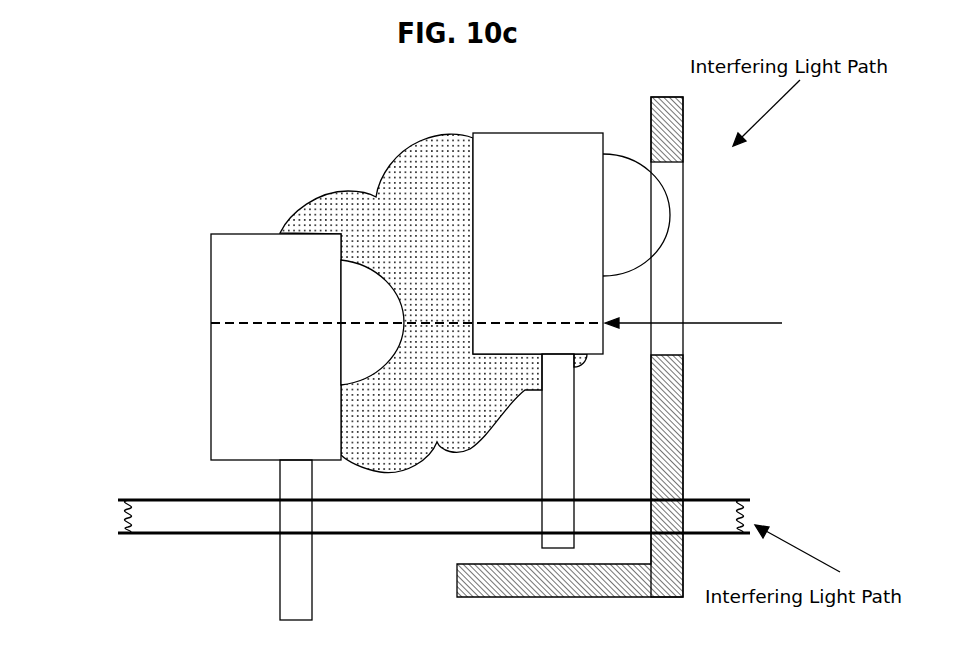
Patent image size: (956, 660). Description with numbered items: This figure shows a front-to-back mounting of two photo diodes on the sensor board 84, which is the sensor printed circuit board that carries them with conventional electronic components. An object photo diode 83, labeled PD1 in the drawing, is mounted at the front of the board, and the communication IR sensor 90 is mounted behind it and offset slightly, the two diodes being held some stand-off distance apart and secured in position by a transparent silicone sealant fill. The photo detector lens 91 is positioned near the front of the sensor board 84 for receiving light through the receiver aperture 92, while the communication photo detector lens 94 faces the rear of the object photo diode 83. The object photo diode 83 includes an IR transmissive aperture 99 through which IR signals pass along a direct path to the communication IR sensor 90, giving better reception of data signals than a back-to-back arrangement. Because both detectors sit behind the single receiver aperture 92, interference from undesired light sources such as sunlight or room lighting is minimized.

The first photodiode PD1 83 is at (553, 133).
The sensor board 84 is at (175, 533).
The communication IR sensor 90 is at (211, 291).
The photo detector lens 91 is at (617, 242).
The receiver aperture 92 is at (697, 194).
The communication photo detector lens 94 is at (428, 562).
The IR transmissive aperture 99 is at (630, 325).